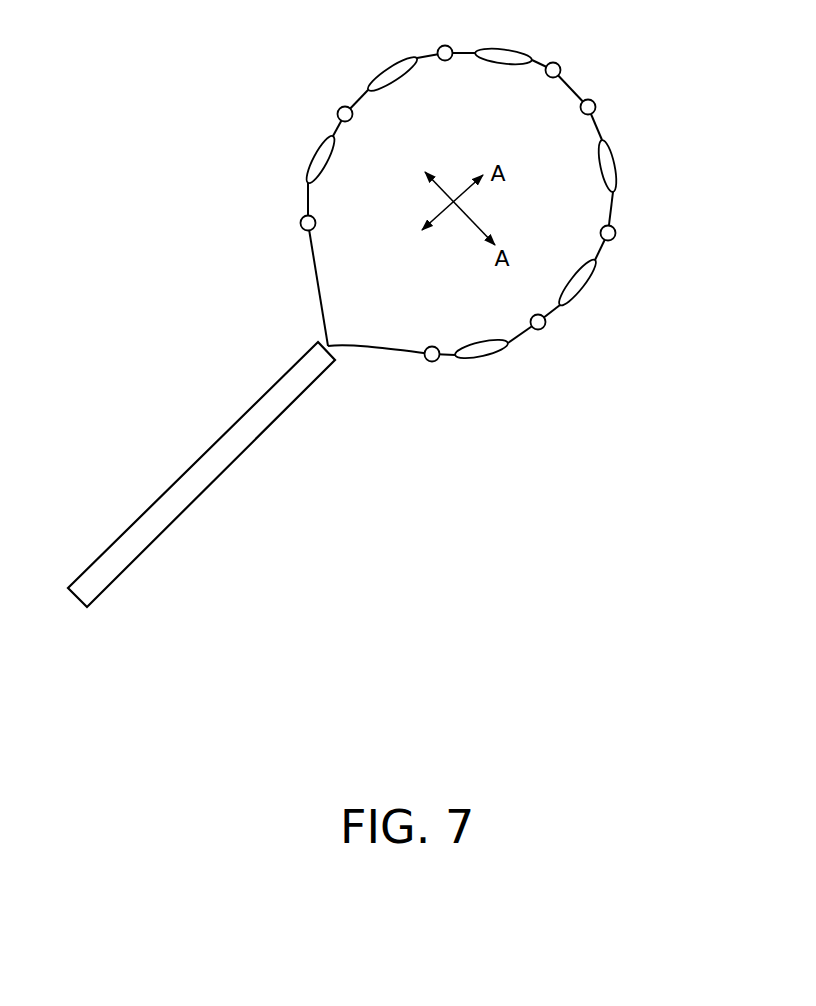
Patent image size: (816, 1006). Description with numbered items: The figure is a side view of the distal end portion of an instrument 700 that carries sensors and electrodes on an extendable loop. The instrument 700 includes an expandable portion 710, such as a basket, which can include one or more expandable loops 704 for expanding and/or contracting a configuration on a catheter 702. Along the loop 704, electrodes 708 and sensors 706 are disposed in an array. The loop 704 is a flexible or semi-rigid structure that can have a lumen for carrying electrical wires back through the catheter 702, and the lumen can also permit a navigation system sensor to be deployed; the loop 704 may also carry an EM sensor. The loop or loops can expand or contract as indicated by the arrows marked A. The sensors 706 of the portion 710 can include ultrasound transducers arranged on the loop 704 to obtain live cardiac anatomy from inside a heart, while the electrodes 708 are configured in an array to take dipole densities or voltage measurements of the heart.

The instrument 700 is at (123, 107).
The catheter 702 is at (178, 517).
The expandable loop 704 is at (378, 350).
The sensors 706 is at (617, 233).
The electrodes 708 is at (612, 155).
The expandable portion 710 is at (326, 96).